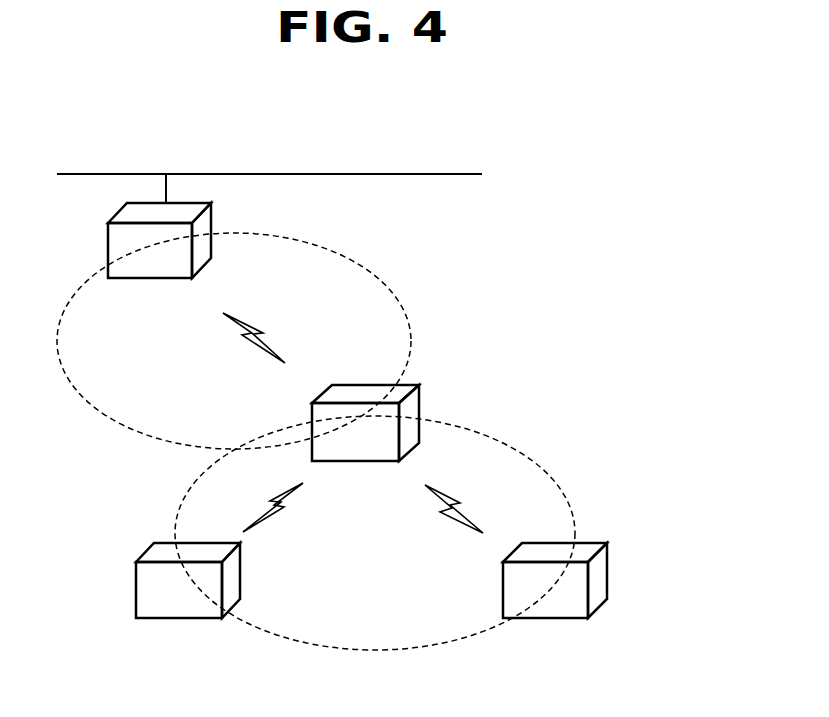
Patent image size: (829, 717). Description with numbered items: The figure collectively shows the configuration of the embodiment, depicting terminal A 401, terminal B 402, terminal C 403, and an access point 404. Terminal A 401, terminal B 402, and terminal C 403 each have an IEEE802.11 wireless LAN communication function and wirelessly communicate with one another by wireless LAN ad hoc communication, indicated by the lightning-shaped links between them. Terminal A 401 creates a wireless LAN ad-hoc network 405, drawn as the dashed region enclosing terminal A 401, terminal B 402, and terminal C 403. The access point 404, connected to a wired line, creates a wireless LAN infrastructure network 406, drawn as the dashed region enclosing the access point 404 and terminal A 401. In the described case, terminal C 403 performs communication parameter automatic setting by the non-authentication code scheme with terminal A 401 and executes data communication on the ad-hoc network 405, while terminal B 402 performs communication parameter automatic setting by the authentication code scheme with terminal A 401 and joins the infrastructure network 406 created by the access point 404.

The terminal A 401 is at (420, 405).
The terminal B 402 is at (241, 565).
The terminal C 403 is at (608, 565).
The access point 404 is at (213, 219).
The wireless LAN ad-hoc network 405 is at (540, 481).
The wireless LAN infrastructure network 406 is at (373, 272).